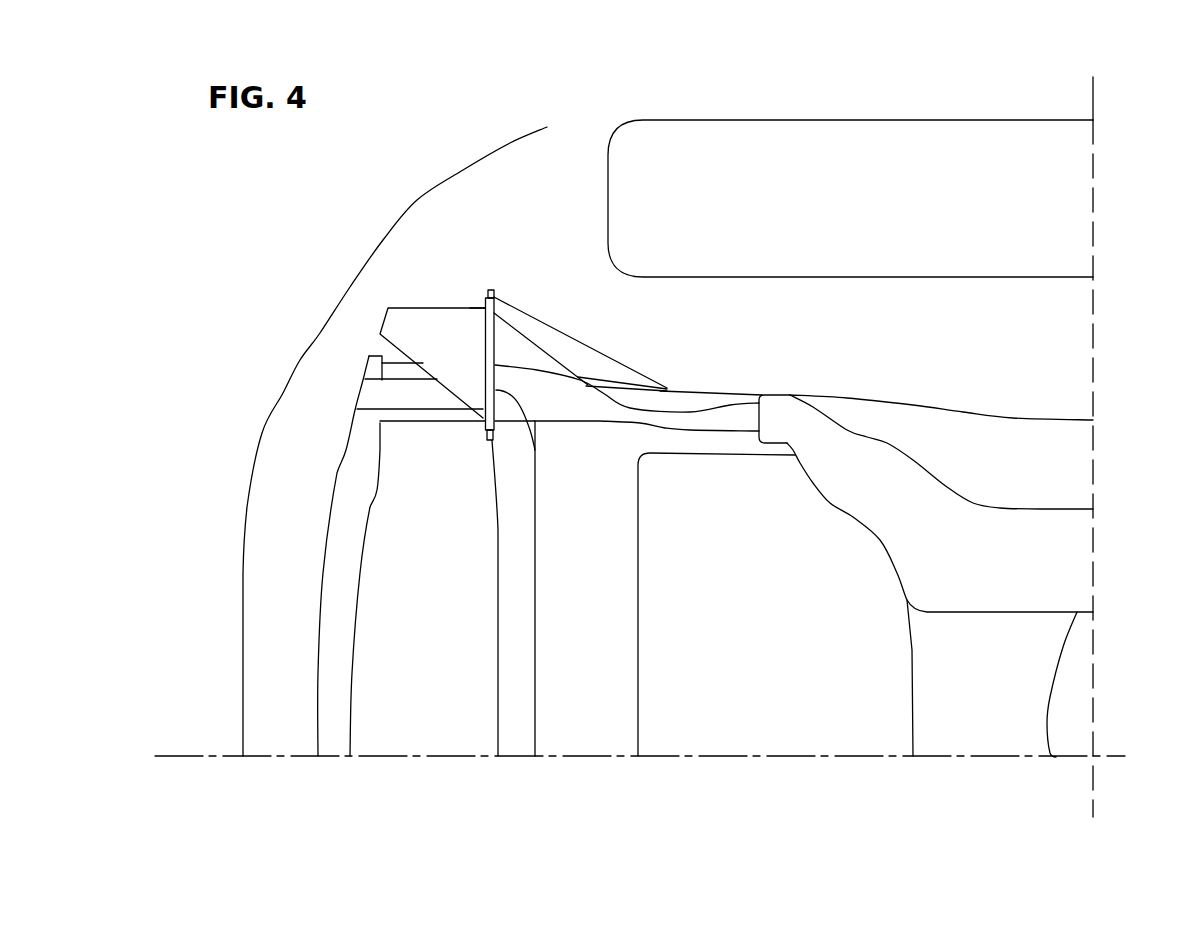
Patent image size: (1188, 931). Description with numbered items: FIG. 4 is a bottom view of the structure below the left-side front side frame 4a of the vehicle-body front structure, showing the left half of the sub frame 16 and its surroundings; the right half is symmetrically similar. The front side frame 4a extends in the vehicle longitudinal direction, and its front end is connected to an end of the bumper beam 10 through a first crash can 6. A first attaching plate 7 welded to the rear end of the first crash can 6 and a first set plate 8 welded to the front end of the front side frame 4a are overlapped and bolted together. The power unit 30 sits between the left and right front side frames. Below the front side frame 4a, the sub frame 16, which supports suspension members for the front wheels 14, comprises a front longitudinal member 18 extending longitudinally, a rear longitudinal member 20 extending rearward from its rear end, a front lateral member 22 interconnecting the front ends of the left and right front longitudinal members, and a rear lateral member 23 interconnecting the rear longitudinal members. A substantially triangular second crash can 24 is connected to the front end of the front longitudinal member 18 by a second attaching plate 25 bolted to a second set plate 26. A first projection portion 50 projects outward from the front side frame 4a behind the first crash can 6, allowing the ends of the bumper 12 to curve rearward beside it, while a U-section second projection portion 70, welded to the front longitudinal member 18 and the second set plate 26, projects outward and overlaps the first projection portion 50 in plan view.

The left-side front side frame 4a is at (713, 393).
The first crash can 6 is at (435, 421).
The first attaching plate 7 is at (485, 440).
The first set plate 8 is at (491, 290).
The bumper beam 10 is at (318, 702).
The bumper 12 is at (243, 598).
The front wheel 14 is at (950, 133).
The sub frame 16 is at (912, 457).
The front longitudinal member 18 is at (710, 433).
The rear longitudinal member 20 is at (907, 560).
The front lateral member 22 is at (515, 665).
The rear lateral member 23 is at (933, 677).
The second crash can 24 is at (415, 312).
The second attaching plate 25 is at (483, 315).
The second set plate 26 is at (535, 450).
The power unit 30 is at (660, 577).
The first projection portion 50 is at (617, 362).
The second projection portion 70 is at (522, 332).